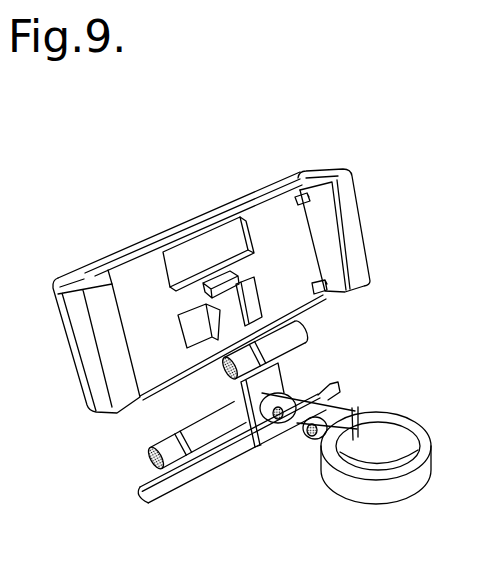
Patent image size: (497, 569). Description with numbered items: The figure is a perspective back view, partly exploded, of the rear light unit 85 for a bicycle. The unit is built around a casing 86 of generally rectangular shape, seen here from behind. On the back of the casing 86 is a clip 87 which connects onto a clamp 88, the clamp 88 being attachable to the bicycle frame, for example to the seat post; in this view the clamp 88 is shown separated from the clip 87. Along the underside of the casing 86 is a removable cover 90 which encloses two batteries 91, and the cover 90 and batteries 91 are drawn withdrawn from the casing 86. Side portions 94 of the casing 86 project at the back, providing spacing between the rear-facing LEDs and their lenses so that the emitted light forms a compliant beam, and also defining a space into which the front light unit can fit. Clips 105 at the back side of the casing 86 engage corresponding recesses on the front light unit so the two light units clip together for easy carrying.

The rear light unit 85 is at (218, 207).
The casing 86 is at (112, 260).
The clip 87 is at (210, 310).
The clamp 88 is at (347, 488).
The removable cover 90 is at (175, 490).
The batteries 91 is at (292, 340).
The side portions 94 is at (102, 404).
The clips 105 is at (299, 195).